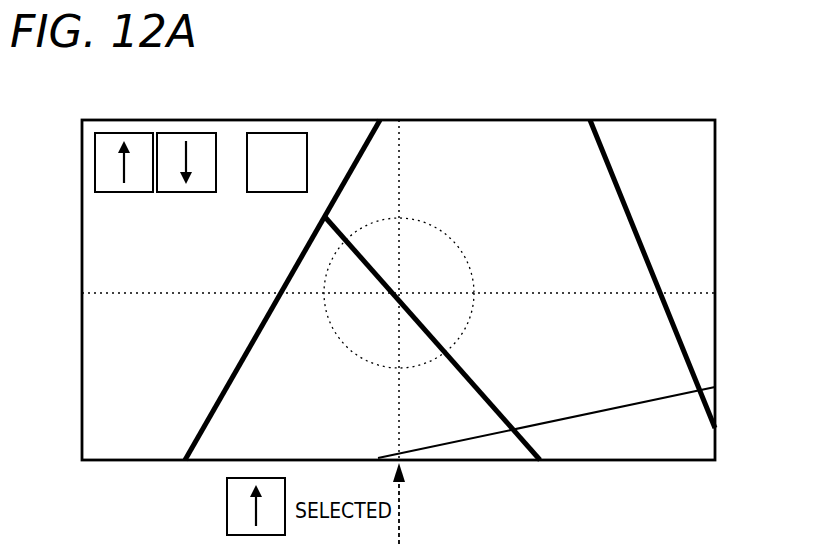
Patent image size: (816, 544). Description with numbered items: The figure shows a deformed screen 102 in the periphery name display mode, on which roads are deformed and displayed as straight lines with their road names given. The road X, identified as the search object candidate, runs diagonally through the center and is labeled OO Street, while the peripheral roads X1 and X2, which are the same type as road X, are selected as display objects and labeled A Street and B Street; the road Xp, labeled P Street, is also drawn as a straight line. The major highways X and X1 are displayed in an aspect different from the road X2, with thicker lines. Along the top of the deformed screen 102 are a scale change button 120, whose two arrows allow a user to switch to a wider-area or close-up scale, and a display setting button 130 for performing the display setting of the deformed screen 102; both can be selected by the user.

The deformed screen 102 is at (716, 238).
The scale change button 120 is at (170, 133).
The display setting button 130 is at (275, 133).
The road X1 is at (222, 390).
The road X is at (495, 350).
The road Xp is at (618, 242).
The road X2 is at (640, 431).